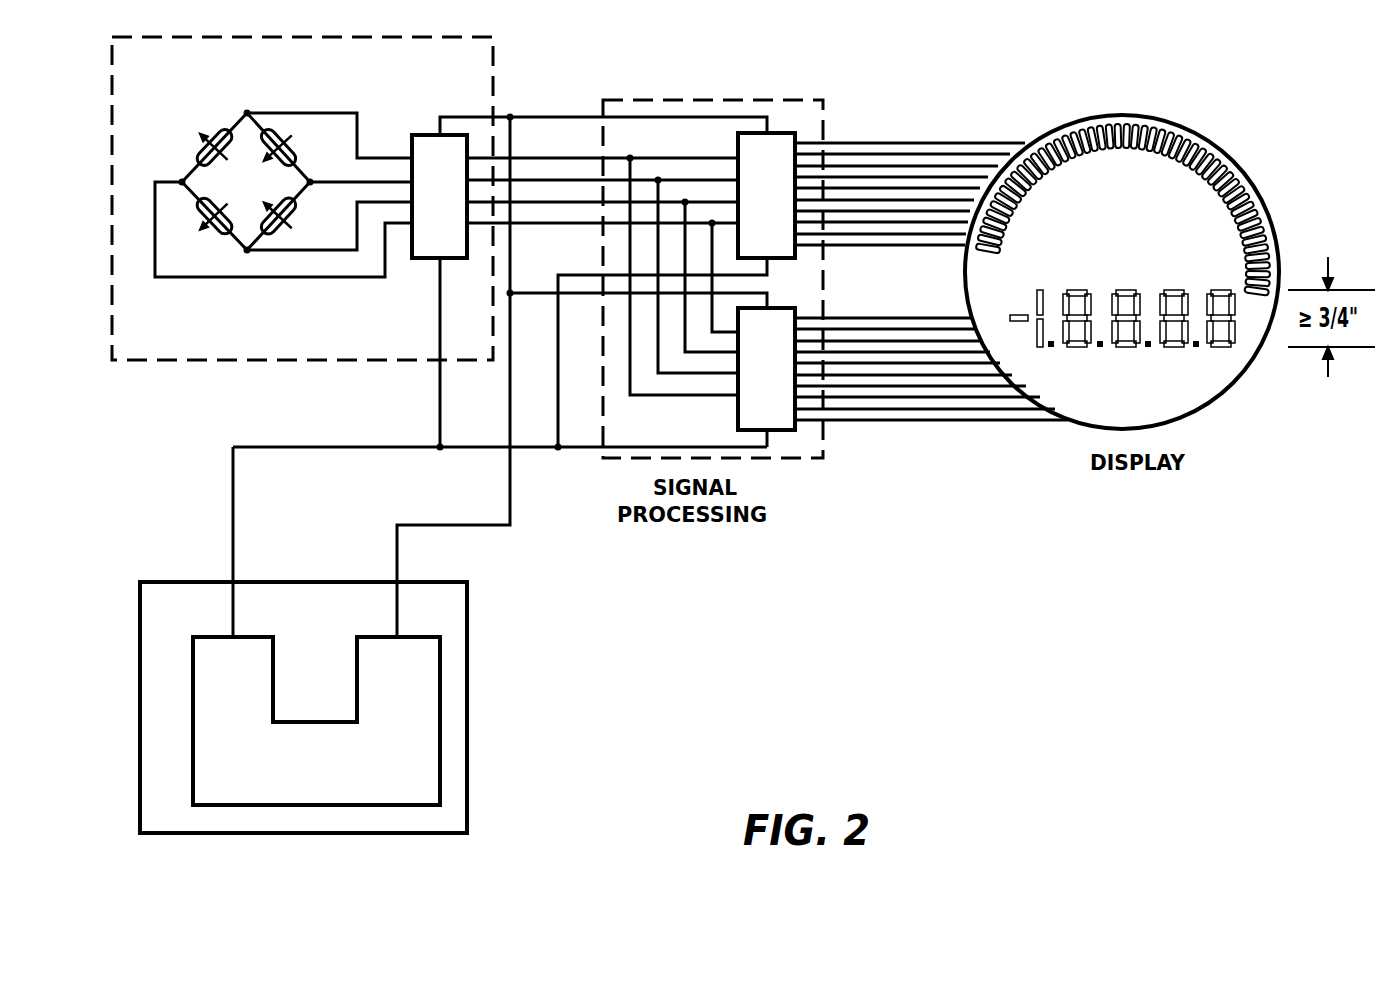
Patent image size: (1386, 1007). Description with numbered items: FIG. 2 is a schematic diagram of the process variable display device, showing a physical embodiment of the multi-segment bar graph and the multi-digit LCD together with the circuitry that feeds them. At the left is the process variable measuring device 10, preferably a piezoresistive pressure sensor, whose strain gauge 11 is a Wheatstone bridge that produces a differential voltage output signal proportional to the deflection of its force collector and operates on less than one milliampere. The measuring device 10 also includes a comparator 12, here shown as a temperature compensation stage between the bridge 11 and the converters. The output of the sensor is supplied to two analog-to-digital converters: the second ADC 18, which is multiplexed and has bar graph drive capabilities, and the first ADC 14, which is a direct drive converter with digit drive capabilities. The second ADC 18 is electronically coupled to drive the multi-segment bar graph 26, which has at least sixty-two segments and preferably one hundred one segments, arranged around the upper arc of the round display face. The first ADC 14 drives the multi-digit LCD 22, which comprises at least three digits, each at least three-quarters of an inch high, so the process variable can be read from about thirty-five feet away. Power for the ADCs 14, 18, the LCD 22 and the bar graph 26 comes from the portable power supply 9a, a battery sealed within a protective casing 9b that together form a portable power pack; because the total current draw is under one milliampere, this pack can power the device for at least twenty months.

The process variable measuring device 10 is at (173, 353).
The strain gauge 11 is at (263, 197).
The comparator 12 is at (457, 212).
The first ADC with digit drive capabilities 14 is at (787, 386).
The second ADC with bar graph drive capabilities 18 is at (787, 212).
The multi-digit LCD 22 is at (1142, 405).
The multi-segment bar graph 26 is at (1142, 222).
The portable power supply 9a is at (334, 770).
The casing 9b is at (467, 648).